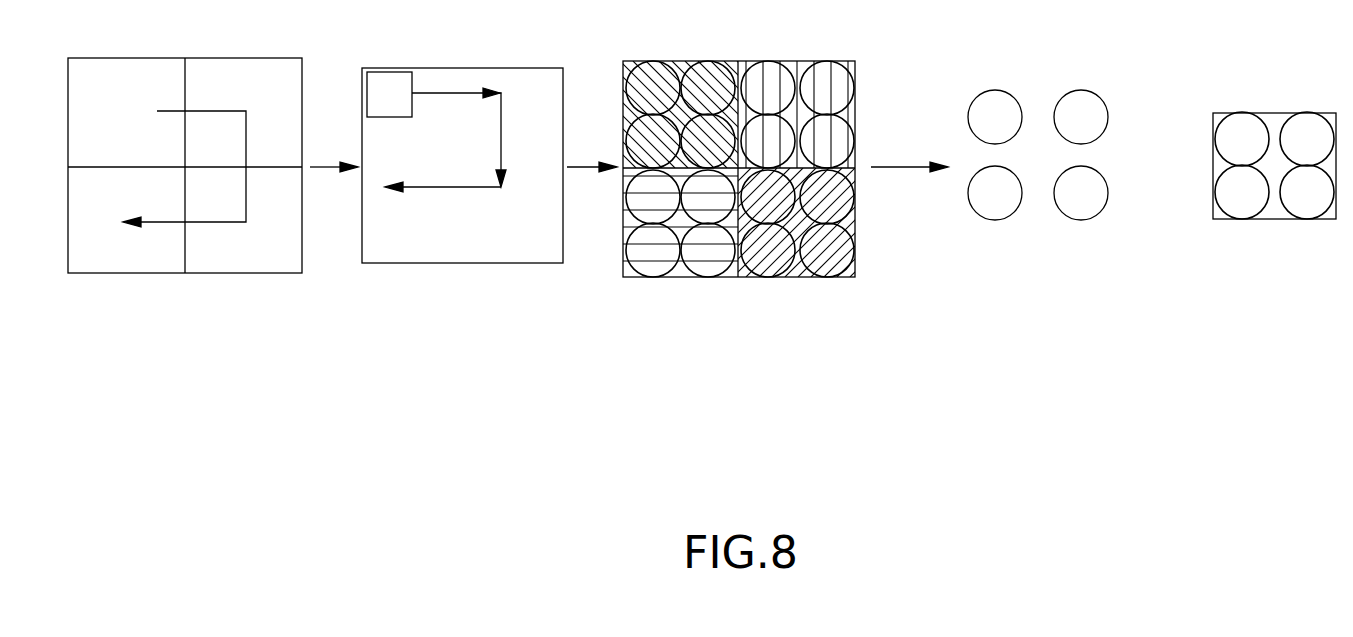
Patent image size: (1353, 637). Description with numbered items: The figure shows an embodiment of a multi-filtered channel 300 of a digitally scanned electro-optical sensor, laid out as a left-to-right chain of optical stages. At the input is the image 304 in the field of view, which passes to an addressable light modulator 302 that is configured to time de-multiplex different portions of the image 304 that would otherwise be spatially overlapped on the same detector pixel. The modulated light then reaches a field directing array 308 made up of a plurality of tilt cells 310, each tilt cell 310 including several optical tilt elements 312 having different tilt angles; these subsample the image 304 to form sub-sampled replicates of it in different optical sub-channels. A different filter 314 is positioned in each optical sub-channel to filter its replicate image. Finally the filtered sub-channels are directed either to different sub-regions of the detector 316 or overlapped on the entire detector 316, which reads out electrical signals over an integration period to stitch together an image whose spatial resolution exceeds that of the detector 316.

The multi-filtered channel 300 is at (620, 430).
The addressable light modulator 302 is at (466, 398).
The image 304 is at (181, 398).
The field directing array 308 is at (737, 214).
The tilt cell 310 is at (685, 62).
The optical tilt element 312 is at (640, 62).
The filter 314 is at (1067, 398).
The detector 316 is at (1292, 398).